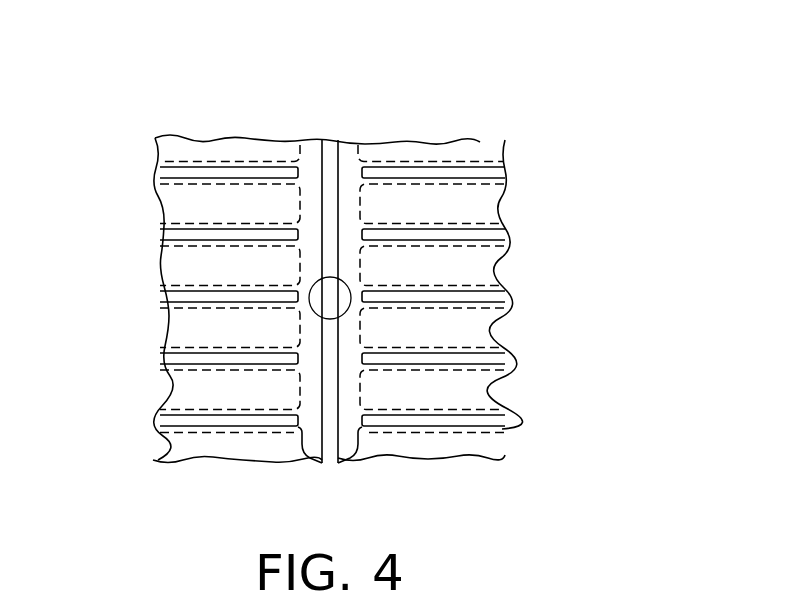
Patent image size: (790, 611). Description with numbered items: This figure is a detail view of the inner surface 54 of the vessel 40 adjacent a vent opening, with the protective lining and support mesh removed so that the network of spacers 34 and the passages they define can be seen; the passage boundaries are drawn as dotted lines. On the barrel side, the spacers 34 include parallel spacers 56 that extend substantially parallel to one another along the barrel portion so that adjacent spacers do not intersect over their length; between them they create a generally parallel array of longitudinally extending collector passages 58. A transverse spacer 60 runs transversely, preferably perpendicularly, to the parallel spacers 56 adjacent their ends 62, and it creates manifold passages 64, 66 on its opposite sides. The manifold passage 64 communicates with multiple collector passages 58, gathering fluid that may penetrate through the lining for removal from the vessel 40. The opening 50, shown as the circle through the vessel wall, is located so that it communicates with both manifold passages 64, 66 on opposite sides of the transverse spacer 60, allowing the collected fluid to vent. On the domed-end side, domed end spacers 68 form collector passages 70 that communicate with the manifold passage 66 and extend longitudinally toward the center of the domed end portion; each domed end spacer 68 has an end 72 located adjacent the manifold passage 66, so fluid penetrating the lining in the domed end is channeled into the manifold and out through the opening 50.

The spacers 34 is at (130, 421).
The vessel 40 is at (497, 140).
The openings 50 is at (312, 300).
The inner surface 54 is at (182, 204).
The parallel spacers 56 is at (505, 234).
The collector passages 58 is at (505, 178).
The transverse spacer 60 is at (368, 249).
The ends of parallel spacers 62 is at (347, 465).
The manifold passage 64 is at (348, 140).
The manifold passage 66 is at (312, 140).
The domed end spacers 68 is at (162, 234).
The collector passages 70 is at (160, 365).
The end of domed end spacer 72 is at (305, 458).